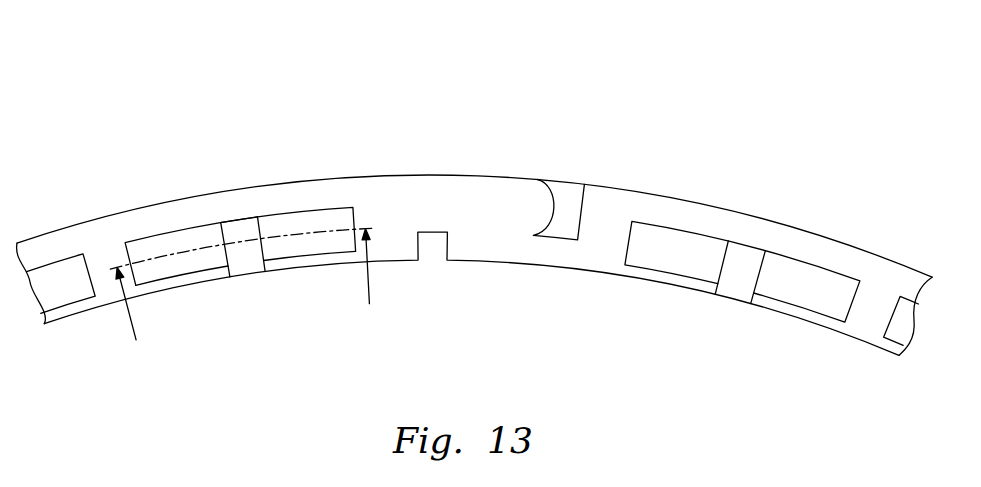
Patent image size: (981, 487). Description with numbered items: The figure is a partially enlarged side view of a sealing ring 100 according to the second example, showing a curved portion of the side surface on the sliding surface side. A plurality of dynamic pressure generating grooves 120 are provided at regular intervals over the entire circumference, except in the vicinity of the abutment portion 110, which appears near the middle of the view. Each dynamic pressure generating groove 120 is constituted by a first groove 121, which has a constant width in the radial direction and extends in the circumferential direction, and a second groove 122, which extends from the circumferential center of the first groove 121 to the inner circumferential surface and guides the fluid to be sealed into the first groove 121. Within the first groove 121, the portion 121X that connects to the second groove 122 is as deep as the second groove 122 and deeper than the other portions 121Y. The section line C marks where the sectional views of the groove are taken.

The sealing ring 100 is at (788, 95).
The abutment portion 110 is at (500, 147).
The dynamic pressure generating groove 120 is at (350, 195).
The first groove 121 is at (293, 210).
The portion of the first groove connecting to the second groove 121X is at (240, 247).
The portions of the first groove other than the connecting portion 121Y is at (152, 243).
The second groove 122 is at (243, 270).
The section line C- C is at (251, 292).